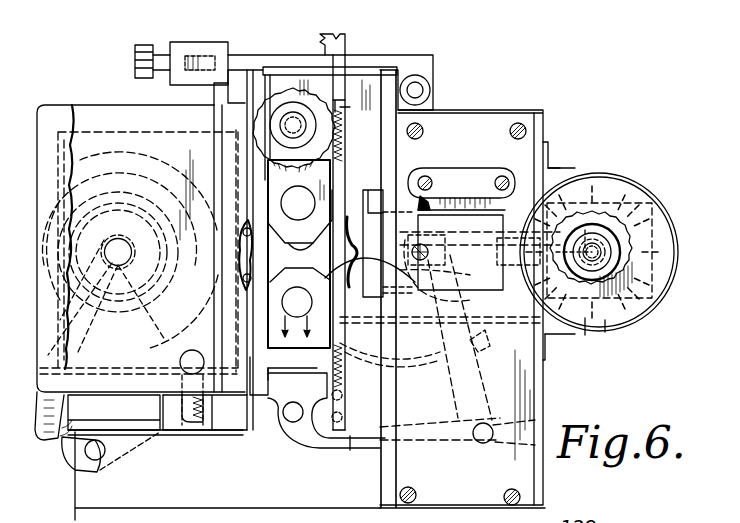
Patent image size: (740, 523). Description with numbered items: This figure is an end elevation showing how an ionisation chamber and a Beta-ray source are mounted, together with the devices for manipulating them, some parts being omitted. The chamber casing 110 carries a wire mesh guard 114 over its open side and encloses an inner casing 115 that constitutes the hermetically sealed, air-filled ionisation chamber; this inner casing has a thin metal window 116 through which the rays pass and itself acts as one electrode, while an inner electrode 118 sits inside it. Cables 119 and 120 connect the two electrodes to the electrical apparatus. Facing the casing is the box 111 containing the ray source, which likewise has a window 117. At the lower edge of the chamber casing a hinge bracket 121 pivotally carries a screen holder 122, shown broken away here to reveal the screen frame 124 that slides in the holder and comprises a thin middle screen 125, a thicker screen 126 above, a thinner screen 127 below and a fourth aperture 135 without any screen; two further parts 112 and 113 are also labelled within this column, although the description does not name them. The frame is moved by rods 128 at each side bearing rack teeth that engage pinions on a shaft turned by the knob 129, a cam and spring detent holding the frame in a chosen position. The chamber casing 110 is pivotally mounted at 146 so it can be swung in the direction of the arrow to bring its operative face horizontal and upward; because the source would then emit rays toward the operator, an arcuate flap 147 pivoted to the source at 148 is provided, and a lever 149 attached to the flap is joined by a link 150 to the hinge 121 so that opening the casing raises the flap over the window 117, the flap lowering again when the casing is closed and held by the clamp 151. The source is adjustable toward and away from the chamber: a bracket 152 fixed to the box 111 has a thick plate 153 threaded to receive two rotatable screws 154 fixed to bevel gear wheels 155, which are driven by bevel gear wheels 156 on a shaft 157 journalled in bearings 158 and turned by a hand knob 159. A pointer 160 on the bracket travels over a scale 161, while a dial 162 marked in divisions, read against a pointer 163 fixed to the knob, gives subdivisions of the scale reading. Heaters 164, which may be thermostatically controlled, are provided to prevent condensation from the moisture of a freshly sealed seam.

The chamber casing 110 is at (117, 115).
The box 111 is at (383, 200).
The upper roller 112 is at (355, 197).
The lower roller 113 is at (335, 268).
The wire mesh guard 114 is at (248, 278).
The inner casing 115 is at (115, 412).
The thin metal window 116 is at (278, 348).
The window 117 is at (415, 285).
The inner electrode 118 is at (122, 392).
The cable 119 is at (45, 420).
The cable 120 is at (189, 415).
The hinge bracket 121 is at (294, 420).
The screen holder 122 is at (283, 72).
The screen frame 124 is at (340, 110).
The screen 125 is at (338, 393).
The thicker screen 126 is at (405, 316).
The thinner screen 127 is at (338, 417).
The rod 128 is at (343, 40).
The knob 129 is at (282, 120).
The fourth aperture 135 is at (336, 240).
The pivot 146 is at (98, 457).
The arcuate flap 147 is at (383, 360).
The pivot 148 is at (437, 238).
The lever 149 is at (505, 418).
The link 150 is at (350, 441).
The clamp 151 is at (253, 62).
The bracket 152 is at (421, 170).
The thick plate 153 is at (484, 348).
The rotatable screw 154 is at (480, 257).
The bevel gear wheel 155 is at (585, 335).
The bevel gear wheel 156 is at (608, 333).
The shaft 157 is at (587, 176).
The bearing 158 is at (607, 328).
The hand knob 159 is at (640, 216).
The pointer 160 is at (503, 165).
The scale 161 is at (498, 170).
The dial 162 is at (617, 233).
The pointer 163 is at (610, 207).
The heater 164 is at (320, 170).